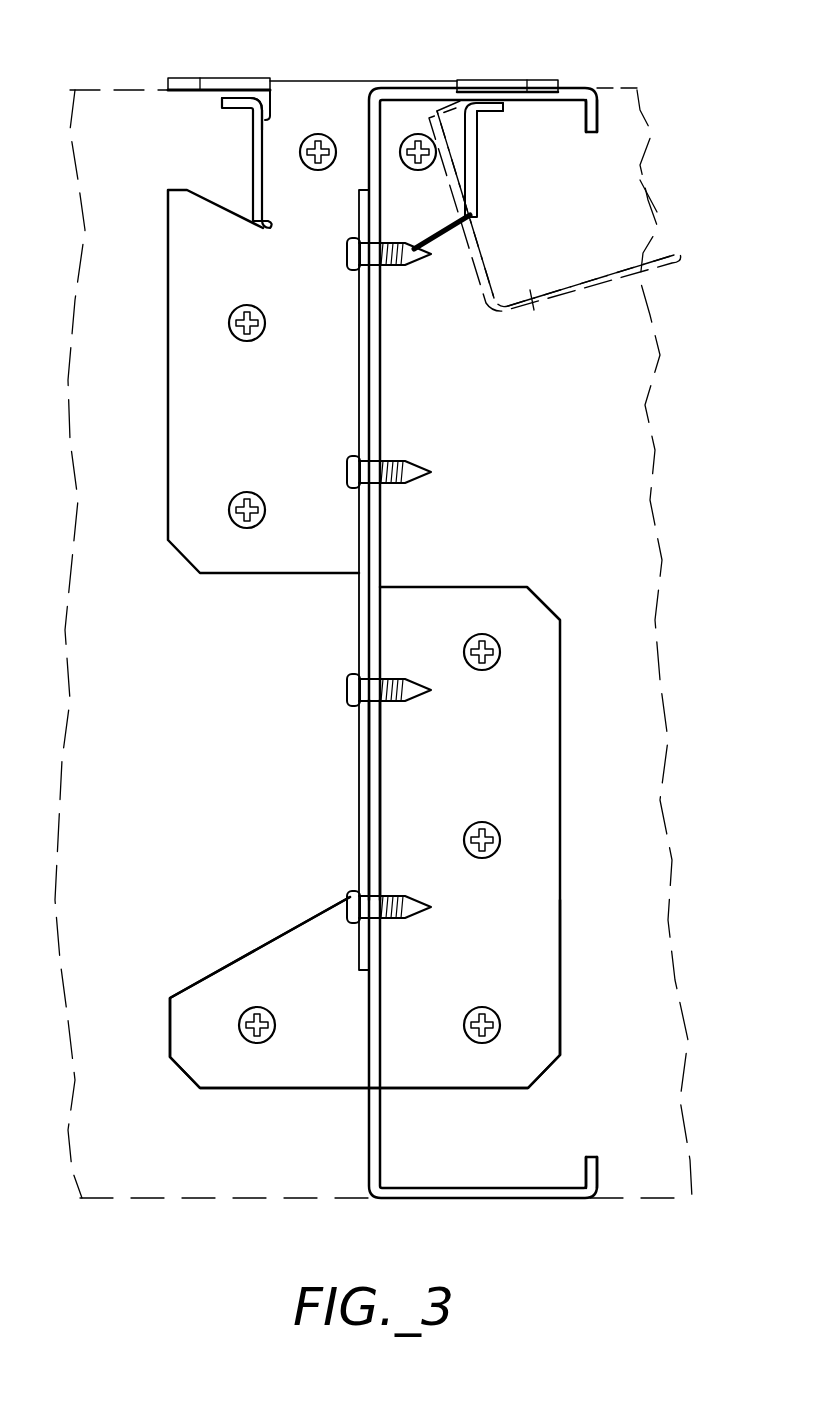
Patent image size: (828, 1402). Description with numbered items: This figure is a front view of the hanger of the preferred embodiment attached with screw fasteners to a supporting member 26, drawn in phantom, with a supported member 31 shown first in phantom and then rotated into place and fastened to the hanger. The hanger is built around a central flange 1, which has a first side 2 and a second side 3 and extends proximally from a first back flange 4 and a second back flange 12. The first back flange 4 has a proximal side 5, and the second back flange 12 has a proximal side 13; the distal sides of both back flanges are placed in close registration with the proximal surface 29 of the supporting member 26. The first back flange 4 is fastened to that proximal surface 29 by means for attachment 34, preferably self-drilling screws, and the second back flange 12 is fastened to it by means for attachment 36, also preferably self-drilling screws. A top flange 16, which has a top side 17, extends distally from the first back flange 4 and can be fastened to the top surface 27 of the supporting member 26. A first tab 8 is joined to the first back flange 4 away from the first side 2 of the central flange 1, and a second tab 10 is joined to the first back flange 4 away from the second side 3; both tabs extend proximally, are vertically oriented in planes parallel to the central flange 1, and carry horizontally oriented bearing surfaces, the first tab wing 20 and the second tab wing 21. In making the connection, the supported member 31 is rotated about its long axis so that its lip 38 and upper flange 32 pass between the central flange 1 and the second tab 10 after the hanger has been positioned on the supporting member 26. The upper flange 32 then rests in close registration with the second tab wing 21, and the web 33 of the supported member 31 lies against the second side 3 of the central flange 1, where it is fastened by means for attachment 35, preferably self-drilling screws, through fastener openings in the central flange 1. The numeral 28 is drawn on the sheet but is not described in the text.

The central flange 1 is at (350, 622).
The first side 2 is at (360, 760).
The second side 3 is at (372, 370).
The first back flange 4 is at (228, 335).
The proximal side 5 is at (182, 408).
The first tab 8 is at (254, 178).
The second tab 10 is at (472, 175).
The second back flange 12 is at (520, 728).
The proximal side 13 is at (535, 905).
The top flange 16 is at (236, 74).
The top side 17 is at (485, 80).
The first tab wing 20 is at (232, 106).
The second tab wing 21 is at (488, 113).
The supporting member 26 is at (648, 84).
The top surface 27 is at (589, 88).
The floor 28 is at (240, 1200).
The proximal surface 29 is at (640, 203).
The supported member 31 is at (565, 305).
The upper flange 32 is at (470, 235).
The web 33 is at (542, 276).
The means for attachment 34 is at (322, 171).
The means for attachment 35 is at (395, 266).
The means for attachment 36 is at (486, 634).
The lip 38 is at (422, 88).